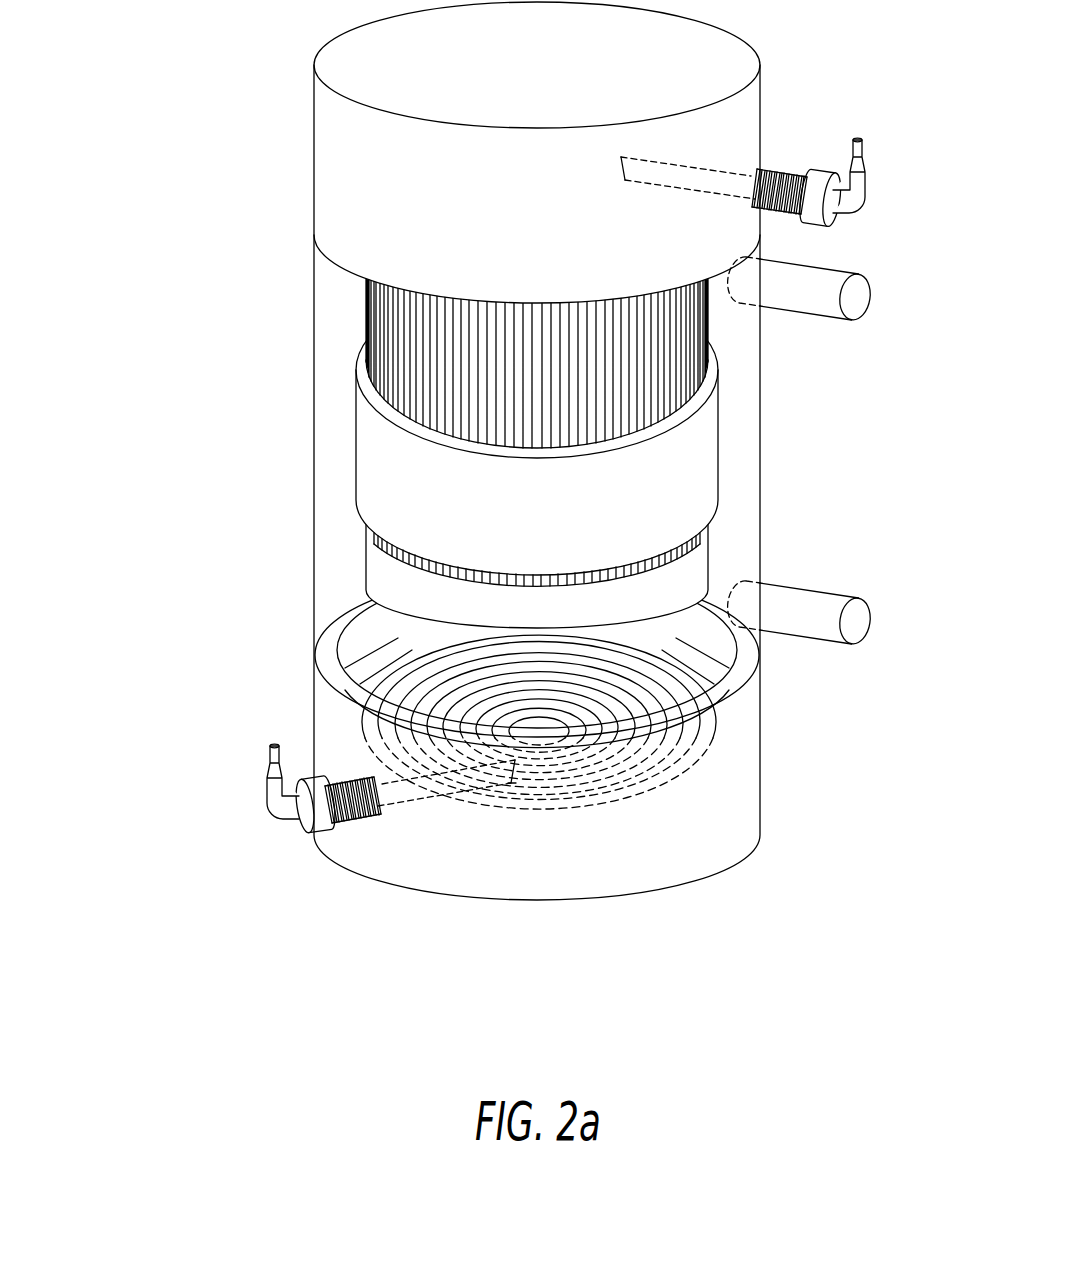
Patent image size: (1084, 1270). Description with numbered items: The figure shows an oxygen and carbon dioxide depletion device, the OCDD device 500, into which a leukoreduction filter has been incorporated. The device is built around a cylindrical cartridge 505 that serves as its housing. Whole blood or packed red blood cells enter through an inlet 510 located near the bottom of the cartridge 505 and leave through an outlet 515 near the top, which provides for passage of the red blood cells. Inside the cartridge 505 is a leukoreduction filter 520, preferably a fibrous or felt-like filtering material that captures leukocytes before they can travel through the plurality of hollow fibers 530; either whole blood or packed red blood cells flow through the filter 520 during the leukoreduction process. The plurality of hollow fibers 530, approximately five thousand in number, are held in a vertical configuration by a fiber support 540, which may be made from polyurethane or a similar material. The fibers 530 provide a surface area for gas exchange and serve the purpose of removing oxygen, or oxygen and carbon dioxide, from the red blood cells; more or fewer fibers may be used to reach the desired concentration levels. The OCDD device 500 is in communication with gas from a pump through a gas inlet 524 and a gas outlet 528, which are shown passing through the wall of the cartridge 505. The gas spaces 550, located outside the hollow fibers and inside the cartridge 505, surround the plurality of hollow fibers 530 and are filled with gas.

The OCDD device 500 is at (499, 451).
The cartridge 505 is at (313, 407).
The inlet 510 is at (273, 773).
The outlet 515 is at (772, 174).
The leukoreduction filter 520 is at (707, 583).
The inlet 524 is at (820, 613).
The outlet 528 is at (820, 287).
The plurality of hollow fibers 530 is at (397, 352).
The fiber support 540 is at (665, 452).
The gas spaces 550 is at (352, 530).